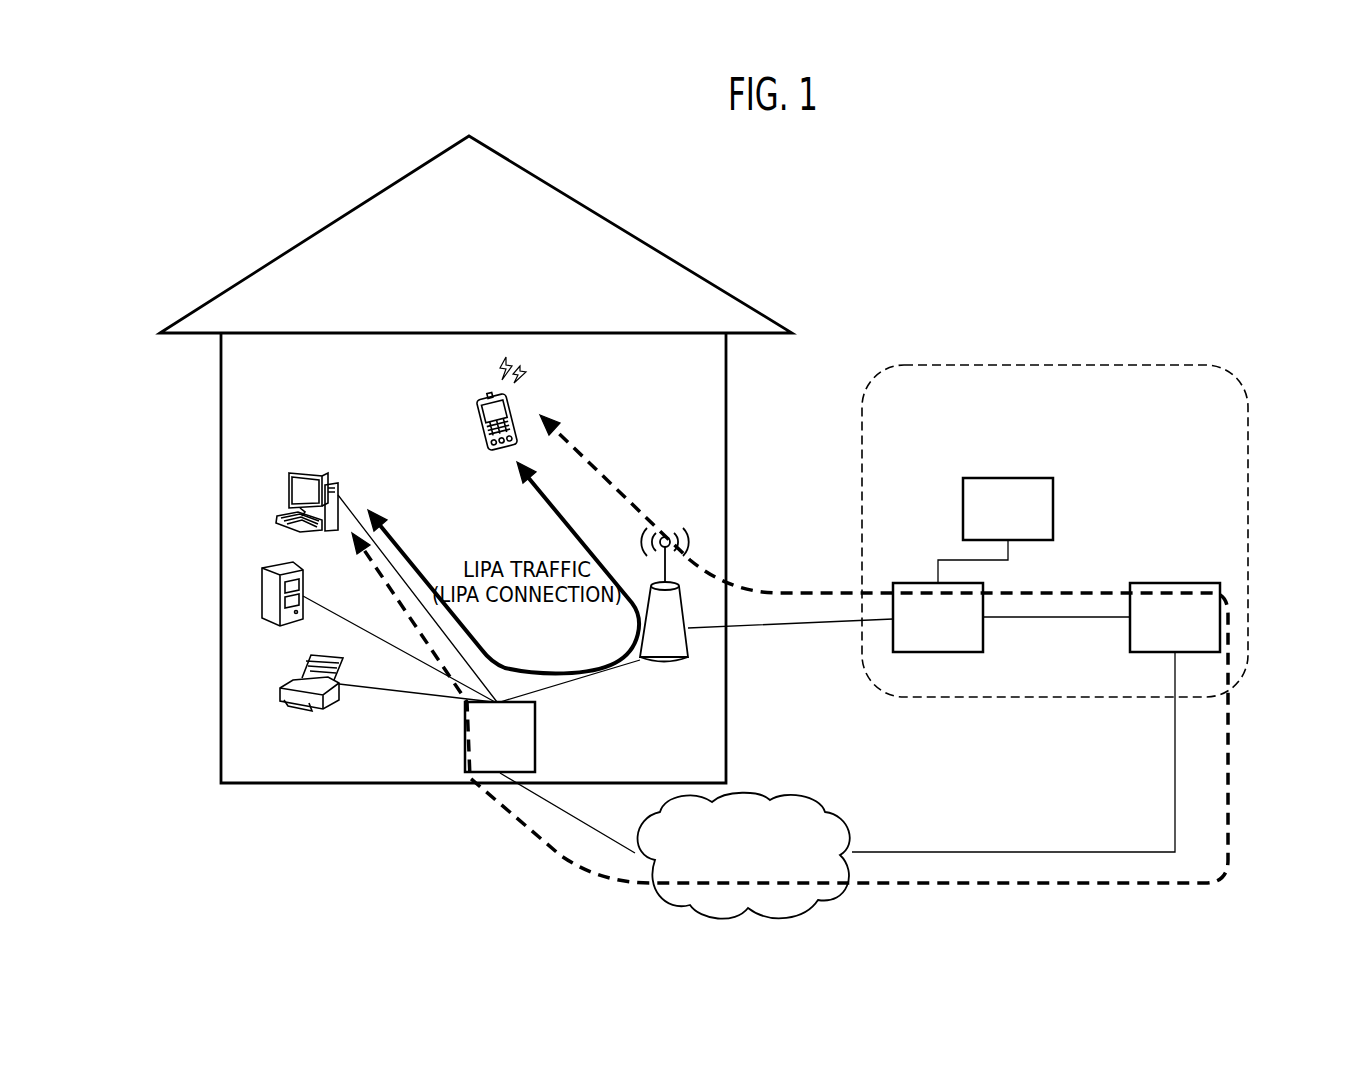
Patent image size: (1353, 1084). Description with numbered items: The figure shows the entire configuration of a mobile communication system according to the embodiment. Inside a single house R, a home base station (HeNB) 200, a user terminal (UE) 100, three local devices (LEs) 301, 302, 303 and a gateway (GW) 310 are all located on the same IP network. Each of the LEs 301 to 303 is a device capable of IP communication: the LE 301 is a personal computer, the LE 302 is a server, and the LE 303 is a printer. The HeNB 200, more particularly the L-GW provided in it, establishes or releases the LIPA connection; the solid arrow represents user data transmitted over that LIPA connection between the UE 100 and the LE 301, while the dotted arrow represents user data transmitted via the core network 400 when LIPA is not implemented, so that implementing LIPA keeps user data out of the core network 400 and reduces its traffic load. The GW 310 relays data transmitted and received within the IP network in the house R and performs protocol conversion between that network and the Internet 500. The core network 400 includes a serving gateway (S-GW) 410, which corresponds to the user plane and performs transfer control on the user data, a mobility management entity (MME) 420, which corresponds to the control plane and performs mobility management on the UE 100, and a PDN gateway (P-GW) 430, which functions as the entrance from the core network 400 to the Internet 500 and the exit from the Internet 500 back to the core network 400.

The house R is at (668, 253).
The user terminal 100 is at (475, 426).
The home base station 200 is at (668, 662).
The local device 301 is at (289, 482).
The local device 302 is at (264, 574).
The local device 303 is at (292, 682).
The gateway 310 is at (538, 739).
The core network 400 is at (1047, 364).
The serving gateway 410 is at (984, 640).
The mobility management entity 420 is at (996, 478).
The PDN gateway 430 is at (1165, 583).
The Internet 500 is at (782, 796).